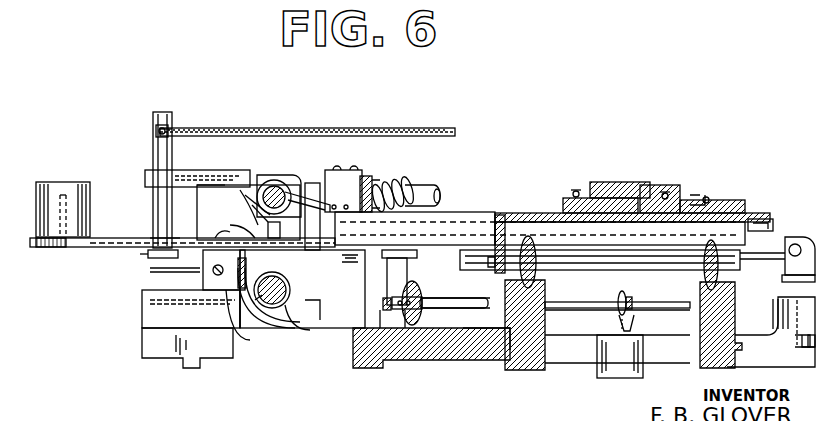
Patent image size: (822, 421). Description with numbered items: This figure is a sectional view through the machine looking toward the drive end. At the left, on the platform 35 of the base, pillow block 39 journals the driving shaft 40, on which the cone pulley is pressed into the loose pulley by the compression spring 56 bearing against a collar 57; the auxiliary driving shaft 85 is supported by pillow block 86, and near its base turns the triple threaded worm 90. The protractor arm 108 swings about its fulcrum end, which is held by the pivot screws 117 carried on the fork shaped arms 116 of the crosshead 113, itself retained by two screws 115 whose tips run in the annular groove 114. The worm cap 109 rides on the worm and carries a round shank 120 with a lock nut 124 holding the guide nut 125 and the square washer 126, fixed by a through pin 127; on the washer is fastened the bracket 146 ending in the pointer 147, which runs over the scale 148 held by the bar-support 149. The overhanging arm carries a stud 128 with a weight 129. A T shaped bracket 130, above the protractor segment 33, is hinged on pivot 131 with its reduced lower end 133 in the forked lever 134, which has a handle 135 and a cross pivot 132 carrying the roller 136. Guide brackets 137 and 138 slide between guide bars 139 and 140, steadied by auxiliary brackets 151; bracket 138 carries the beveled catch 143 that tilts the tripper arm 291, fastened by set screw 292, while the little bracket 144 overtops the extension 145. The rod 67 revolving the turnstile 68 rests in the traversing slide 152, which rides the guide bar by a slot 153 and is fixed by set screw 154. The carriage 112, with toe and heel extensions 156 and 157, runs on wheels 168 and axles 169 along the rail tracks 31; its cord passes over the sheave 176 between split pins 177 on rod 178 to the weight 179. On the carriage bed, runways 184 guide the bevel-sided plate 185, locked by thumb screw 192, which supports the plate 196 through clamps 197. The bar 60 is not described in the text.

The channeled rail tracks 31 is at (690, 299).
The protractor segment 33 is at (470, 342).
The platform 35 is at (142, 346).
The pillow block 39 is at (335, 330).
The driving shaft 40 is at (430, 192).
The compression spring 56 is at (398, 182).
The collar 57 is at (382, 182).
The bar 60 is at (292, 130).
The rod 67 is at (150, 270).
The turnstile 68 is at (157, 145).
The auxiliary driving shaft 85 is at (268, 185).
The pillow block 86 is at (147, 174).
The triple threaded worm 90 is at (250, 322).
The protractor arm 108 is at (118, 238).
The worm cap 109 is at (362, 270).
The carriage 112 is at (507, 214).
The crosshead 113 is at (795, 297).
The annular groove 114 is at (798, 339).
The screws 115 is at (811, 343).
The fork shaped arms 116 is at (788, 268).
The pivot screw 117 is at (795, 243).
The round shank 120 is at (250, 195).
The lock nut 124 is at (250, 200).
The guide nut 125 is at (268, 230).
The square washer 126 is at (262, 216).
The through pin 127 is at (238, 192).
The upright stud 128 is at (62, 248).
The weight 129 is at (60, 190).
The T shaped bracket 130 is at (417, 254).
The pivot 131 is at (402, 312).
The cross pivot 132 is at (422, 295).
The reduced lower end 133 is at (385, 315).
The forked lever 134 is at (386, 306).
The handle 135 is at (468, 303).
The roller 136 is at (430, 360).
The angular guide bracket 137 is at (250, 268).
The angular guide bracket 138 is at (308, 236).
The guide bar 139 is at (213, 272).
The guide bar 140 is at (270, 300).
The toothshaped beveled catch 143 is at (342, 264).
The little bracket 144 is at (215, 236).
The extension 145 is at (230, 226).
The bracket 146 is at (345, 163).
The indicator or pointer 147 is at (305, 190).
The engraved metal scale 148 is at (274, 180).
The flat bar-support 149 is at (367, 176).
The auxiliary brackets 151 is at (230, 328).
The traversing slide 152 is at (148, 254).
The slot 153 is at (260, 300).
The set screw 154 is at (160, 236).
The toe-shaped extension 156 is at (462, 218).
The heel-shaped extension 157 is at (757, 219).
The wheels 168 is at (540, 272).
The axles 169 is at (626, 297).
The sheave 176 is at (635, 311).
The split pins 177 is at (618, 300).
The rod 178 is at (565, 312).
The weight 179 is at (600, 365).
The recessed runways 184 is at (565, 203).
The bevel-sided plate 185 is at (608, 186).
The thumb screw 192 is at (700, 203).
The plate 196 is at (658, 186).
The clamps 197 is at (575, 190).
The tripper arm 291 is at (300, 322).
The set screw 292 is at (315, 328).